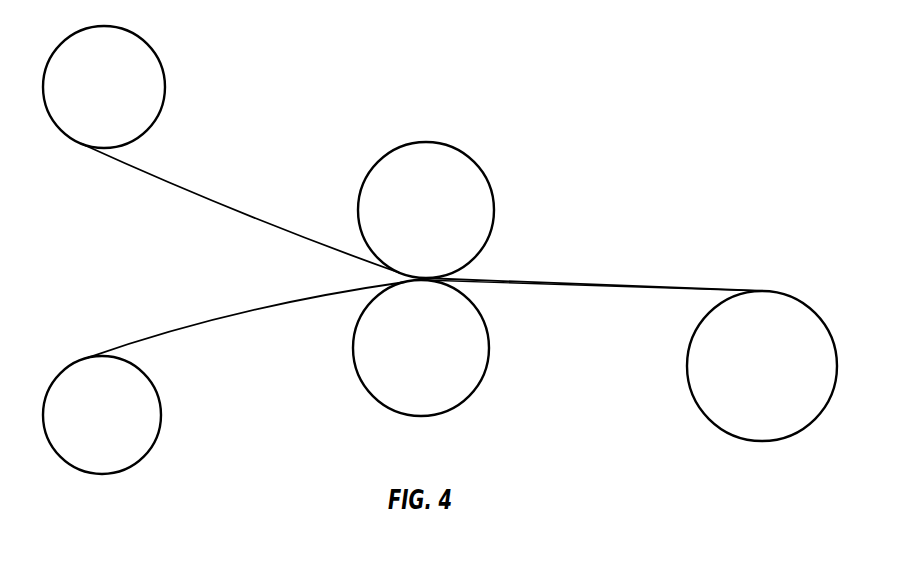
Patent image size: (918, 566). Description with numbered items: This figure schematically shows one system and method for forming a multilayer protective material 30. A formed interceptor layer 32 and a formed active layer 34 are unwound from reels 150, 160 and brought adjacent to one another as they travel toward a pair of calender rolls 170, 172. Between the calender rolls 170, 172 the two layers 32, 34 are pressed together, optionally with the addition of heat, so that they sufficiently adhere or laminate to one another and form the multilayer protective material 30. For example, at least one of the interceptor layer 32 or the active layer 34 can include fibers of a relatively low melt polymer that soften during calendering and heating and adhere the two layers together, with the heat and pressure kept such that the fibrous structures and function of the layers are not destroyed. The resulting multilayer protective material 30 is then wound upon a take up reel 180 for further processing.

The reel 150 is at (87, 424).
The reel 160 is at (89, 98).
The calender roll 170 is at (410, 218).
The calender roll 172 is at (405, 357).
The take up reel 180 is at (748, 375).
The multilayer protective material 30 is at (615, 284).
The interceptor layer 32 is at (267, 221).
The active layer 34 is at (272, 310).